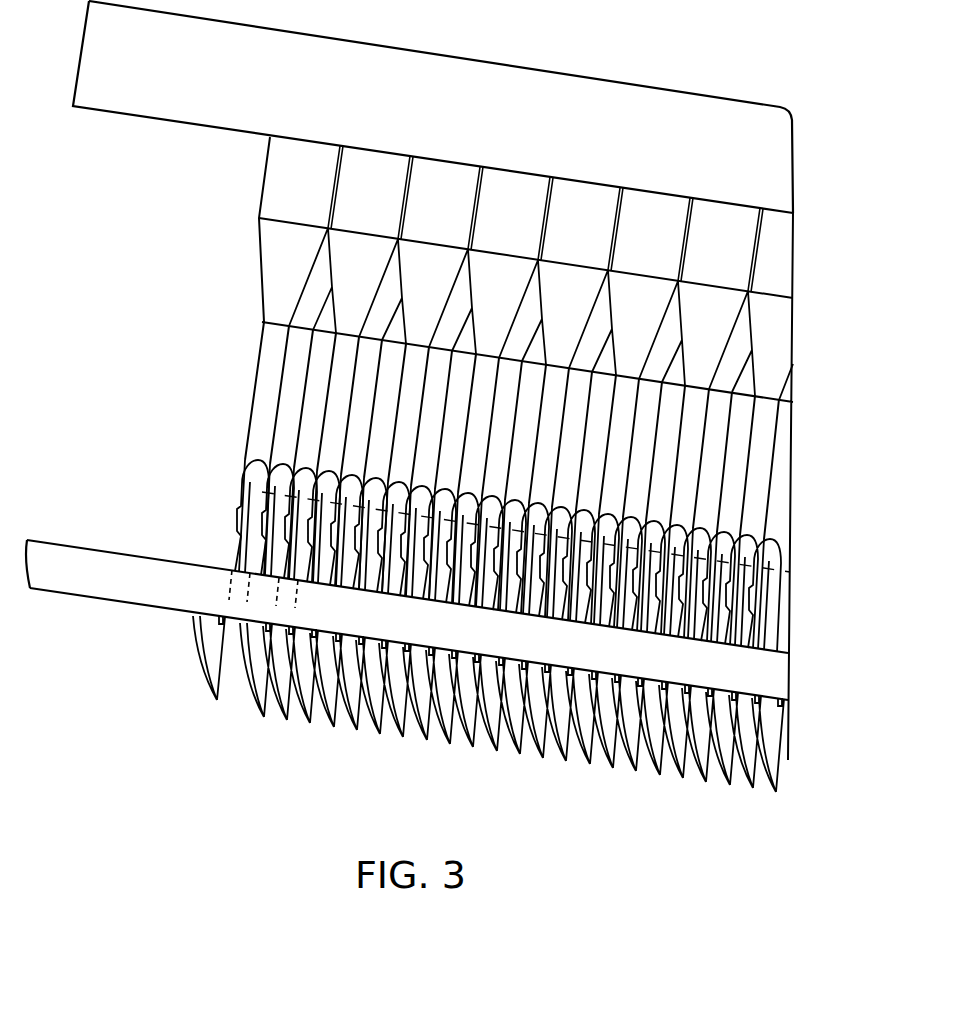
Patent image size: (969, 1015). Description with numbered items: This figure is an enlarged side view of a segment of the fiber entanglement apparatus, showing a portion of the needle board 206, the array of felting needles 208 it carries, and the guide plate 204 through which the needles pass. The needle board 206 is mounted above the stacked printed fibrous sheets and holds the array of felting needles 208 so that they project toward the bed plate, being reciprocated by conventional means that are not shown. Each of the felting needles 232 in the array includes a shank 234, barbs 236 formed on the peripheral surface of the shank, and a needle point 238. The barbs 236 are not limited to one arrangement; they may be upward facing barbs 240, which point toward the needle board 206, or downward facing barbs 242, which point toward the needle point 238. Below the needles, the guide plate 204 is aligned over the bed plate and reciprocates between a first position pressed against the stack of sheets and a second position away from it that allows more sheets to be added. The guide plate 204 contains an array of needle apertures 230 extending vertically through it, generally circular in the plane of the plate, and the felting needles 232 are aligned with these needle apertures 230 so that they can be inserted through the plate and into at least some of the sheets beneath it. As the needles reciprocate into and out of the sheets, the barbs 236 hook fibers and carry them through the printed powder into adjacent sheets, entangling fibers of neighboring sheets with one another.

The guide plate 204 is at (55, 540).
The needle board 206 is at (118, 115).
The array of felting needles 208 is at (205, 249).
The needle apertures 230 is at (228, 617).
The felting needles 232 is at (222, 391).
The shank 234 is at (260, 363).
The barbs 236 is at (248, 537).
The needle point 238 is at (215, 706).
The upward facing barbs 240 is at (295, 540).
The downward facing barbs 242 is at (312, 520).